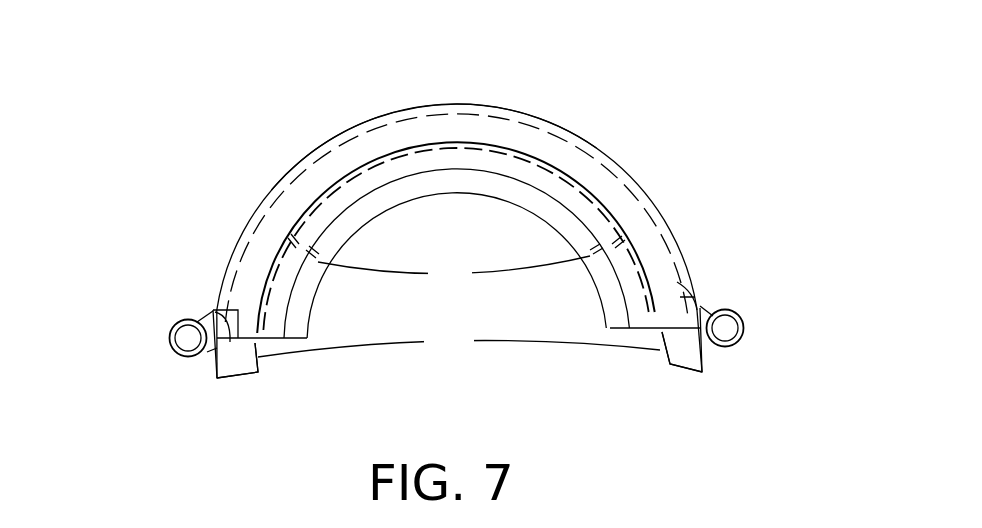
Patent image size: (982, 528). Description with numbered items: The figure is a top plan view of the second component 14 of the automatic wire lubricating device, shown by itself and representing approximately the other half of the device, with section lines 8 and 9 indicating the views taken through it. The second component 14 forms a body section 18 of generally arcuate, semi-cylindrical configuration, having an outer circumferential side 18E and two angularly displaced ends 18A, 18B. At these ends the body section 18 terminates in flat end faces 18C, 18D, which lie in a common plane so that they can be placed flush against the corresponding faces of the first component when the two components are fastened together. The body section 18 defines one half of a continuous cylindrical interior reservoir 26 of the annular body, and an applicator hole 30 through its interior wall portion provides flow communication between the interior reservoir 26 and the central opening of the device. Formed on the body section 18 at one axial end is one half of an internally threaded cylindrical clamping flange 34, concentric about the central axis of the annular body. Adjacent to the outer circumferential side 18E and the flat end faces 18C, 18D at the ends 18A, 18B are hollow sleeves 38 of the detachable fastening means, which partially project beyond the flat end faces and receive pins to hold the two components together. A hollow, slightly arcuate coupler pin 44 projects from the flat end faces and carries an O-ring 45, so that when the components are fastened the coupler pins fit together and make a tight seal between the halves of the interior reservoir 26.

The second component 14 is at (690, 184).
The body section 18 is at (252, 207).
The angularly displaced end 18A is at (218, 285).
The angularly displaced end 18B is at (690, 297).
The flat end face 18C is at (210, 315).
The flat end face 18D is at (395, 203).
The outer circumferential side 18E is at (602, 148).
The interior reservoir 26 is at (496, 121).
The applicator hole 30 is at (454, 270).
The clamping flange 34 is at (320, 190).
The sleeve 38 is at (170, 338).
The coupler pin 44 is at (459, 343).
The O-ring 45 is at (245, 372).
The section line 8- 8 is at (818, 418).
The section line 9- 9 is at (795, 48).